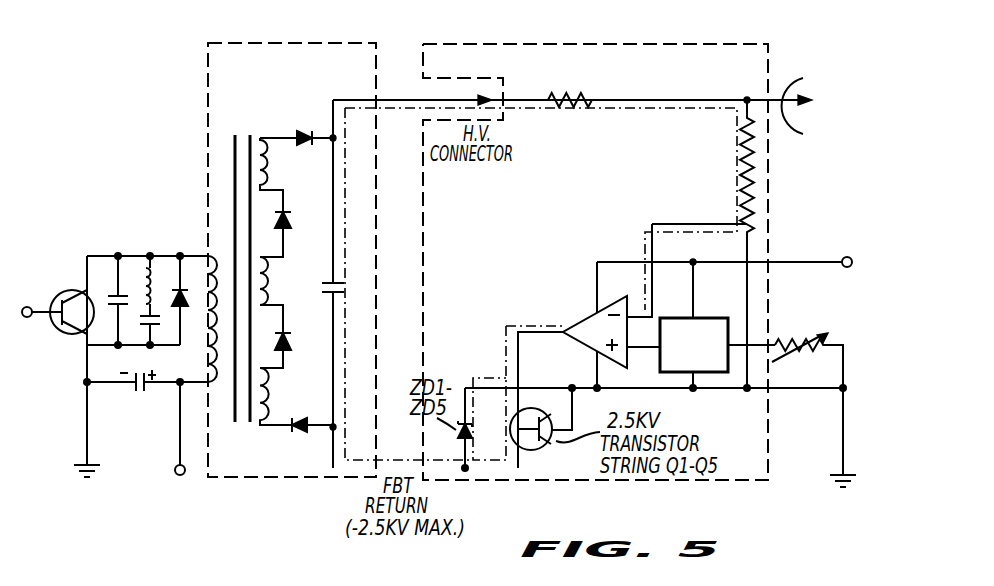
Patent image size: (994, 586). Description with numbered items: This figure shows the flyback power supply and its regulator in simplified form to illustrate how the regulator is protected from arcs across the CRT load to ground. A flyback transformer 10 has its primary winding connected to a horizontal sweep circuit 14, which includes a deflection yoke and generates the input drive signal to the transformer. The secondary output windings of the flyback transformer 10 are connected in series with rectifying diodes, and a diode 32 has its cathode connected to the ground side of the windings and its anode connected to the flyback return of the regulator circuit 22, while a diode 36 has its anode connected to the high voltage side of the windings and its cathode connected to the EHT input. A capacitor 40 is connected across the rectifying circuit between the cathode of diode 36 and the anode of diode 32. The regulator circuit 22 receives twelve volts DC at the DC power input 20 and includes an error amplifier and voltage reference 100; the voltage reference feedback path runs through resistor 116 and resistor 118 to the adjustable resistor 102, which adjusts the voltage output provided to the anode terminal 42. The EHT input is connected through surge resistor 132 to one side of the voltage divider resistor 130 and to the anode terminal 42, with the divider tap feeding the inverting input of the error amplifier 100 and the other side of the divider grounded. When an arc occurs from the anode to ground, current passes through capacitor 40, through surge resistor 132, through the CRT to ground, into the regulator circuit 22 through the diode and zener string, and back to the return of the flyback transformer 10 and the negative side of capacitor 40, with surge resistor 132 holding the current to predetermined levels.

The flyback transformer 10 is at (208, 107).
The horizontal sweep circuit 14 is at (115, 330).
The DC power input 20 is at (847, 256).
The regulator circuit 22 is at (698, 45).
The diode 32 is at (296, 418).
The diode 36 is at (308, 132).
The capacitor 40 is at (347, 294).
The anode terminal 42 is at (794, 78).
The error amplifier and voltage reference 100 is at (585, 314).
The adjustable resistor 102 is at (820, 389).
The resistor 116 is at (717, 323).
The resistor 118 is at (730, 318).
The voltage divider resistor 130 is at (752, 187).
The surge resistor 132 is at (574, 136).